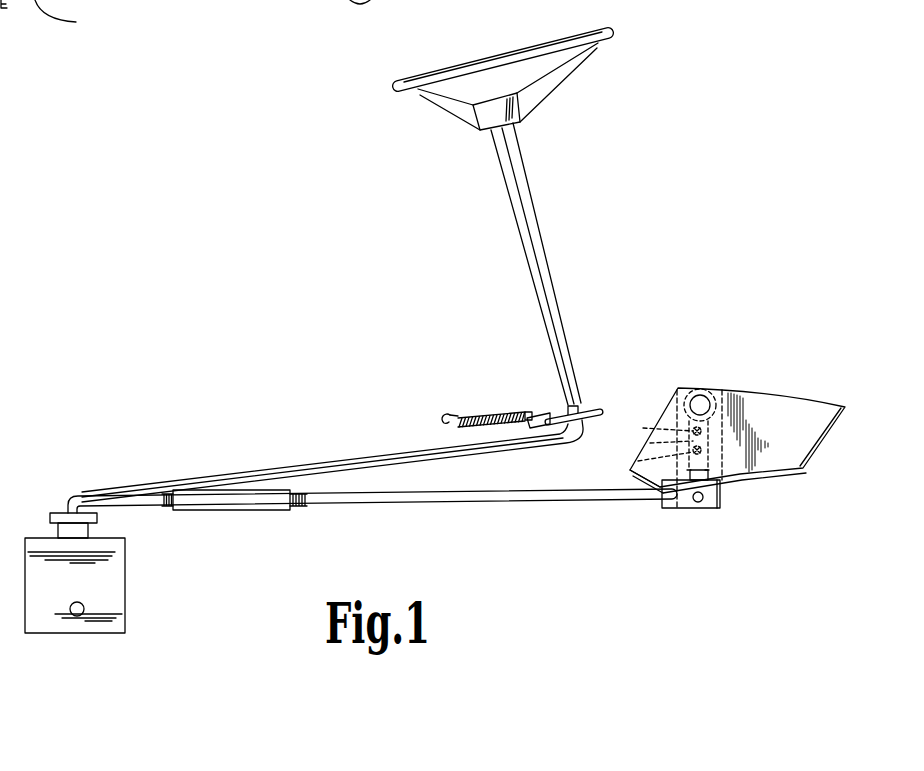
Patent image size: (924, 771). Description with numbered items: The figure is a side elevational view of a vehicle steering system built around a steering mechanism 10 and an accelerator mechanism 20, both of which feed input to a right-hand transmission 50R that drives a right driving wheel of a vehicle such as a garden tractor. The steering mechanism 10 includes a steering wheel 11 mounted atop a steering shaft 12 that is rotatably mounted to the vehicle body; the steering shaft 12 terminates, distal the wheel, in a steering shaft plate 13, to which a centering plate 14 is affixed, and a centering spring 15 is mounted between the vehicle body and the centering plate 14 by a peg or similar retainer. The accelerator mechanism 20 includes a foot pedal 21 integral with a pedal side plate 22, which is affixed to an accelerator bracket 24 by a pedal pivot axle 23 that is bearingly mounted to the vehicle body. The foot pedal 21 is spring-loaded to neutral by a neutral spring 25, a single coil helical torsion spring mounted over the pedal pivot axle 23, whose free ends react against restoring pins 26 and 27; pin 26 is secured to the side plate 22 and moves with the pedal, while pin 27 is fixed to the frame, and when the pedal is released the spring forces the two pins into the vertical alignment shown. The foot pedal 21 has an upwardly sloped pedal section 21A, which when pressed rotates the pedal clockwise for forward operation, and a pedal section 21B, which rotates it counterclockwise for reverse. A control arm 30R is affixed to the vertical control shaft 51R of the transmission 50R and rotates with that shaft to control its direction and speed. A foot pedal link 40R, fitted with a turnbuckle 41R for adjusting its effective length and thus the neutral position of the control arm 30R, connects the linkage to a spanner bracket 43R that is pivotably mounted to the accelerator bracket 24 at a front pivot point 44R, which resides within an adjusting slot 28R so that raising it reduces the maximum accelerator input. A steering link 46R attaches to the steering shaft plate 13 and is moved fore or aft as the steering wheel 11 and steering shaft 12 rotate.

The steering mechanism 10 is at (506, 183).
The steering wheel 11 is at (578, 36).
The steering shaft 12 is at (529, 190).
The steering shaft plate 13 is at (597, 408).
The centering plate 14 is at (536, 411).
The centering spring 15 is at (464, 411).
The accelerator mechanism 20 is at (722, 453).
The foot pedal 21 is at (772, 480).
The pedal section 21A is at (828, 431).
The pedal section 21B is at (630, 476).
The pedal side plate 22 is at (772, 398).
The pedal pivot axle 23 is at (701, 395).
The accelerator bracket 24 is at (680, 396).
The neutral spring 25 is at (654, 460).
The restoring pin 26 is at (666, 441).
The restoring pin 27 is at (666, 420).
The adjusting slot 28R is at (721, 496).
The control arm 30R is at (66, 510).
The foot pedal link 40R is at (428, 496).
The turnbuckle 41R is at (255, 510).
The spanner bracket 43R is at (662, 506).
The front pivot point 44R is at (699, 503).
The steering link 46R is at (335, 460).
The transmission 50R is at (124, 605).
The vertical control shaft 51R is at (92, 530).